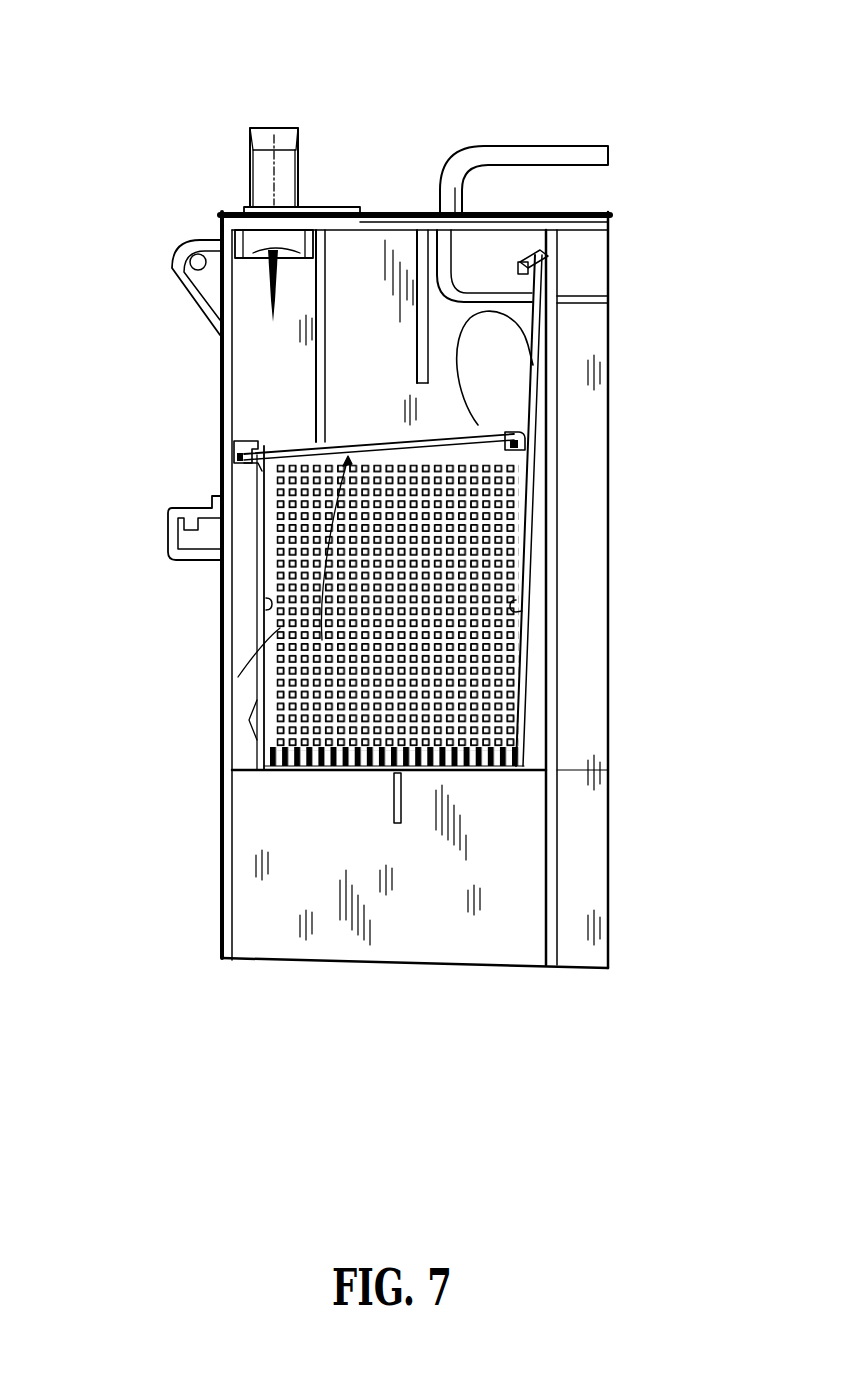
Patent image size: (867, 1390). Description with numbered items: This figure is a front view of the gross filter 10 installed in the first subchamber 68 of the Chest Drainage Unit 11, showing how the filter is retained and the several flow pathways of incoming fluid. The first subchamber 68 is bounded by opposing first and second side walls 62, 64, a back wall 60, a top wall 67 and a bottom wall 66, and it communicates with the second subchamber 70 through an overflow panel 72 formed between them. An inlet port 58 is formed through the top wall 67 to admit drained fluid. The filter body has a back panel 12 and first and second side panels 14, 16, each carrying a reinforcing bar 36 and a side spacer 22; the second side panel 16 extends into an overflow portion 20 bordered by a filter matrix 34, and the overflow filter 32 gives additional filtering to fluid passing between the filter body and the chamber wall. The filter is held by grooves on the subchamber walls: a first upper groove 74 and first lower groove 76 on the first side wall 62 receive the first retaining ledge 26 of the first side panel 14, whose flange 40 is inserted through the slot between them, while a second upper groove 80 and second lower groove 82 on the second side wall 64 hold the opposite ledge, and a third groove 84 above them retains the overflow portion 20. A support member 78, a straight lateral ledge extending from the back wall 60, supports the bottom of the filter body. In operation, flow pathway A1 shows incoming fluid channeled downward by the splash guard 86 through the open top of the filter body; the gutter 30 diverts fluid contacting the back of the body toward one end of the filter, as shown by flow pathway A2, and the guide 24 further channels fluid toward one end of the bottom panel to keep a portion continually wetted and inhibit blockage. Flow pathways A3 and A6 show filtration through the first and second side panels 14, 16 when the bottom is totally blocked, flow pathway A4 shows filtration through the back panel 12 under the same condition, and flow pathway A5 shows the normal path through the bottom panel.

The Chest Drainage Unit 11 is at (208, 170).
The inlet port 58 is at (292, 126).
The top wall 67 is at (423, 232).
The overflow portion 20 is at (494, 292).
The third groove 84 is at (533, 252).
The splash guard 86 is at (330, 245).
The gross filter 10 is at (372, 402).
The overflow filter 32 is at (542, 326).
The overflow panel 72 is at (560, 346).
The gutter 30 is at (536, 425).
The second upper groove 80 is at (522, 441).
The second lower groove 82 is at (555, 398).
The back panel 12 is at (505, 548).
The filter matrix 34 is at (520, 606).
The reinforcing bar 36 is at (520, 662).
The second side panel 16 is at (533, 742).
The side spacer 22 is at (538, 746).
The second side wall 64 is at (560, 812).
The second subchamber 70 is at (596, 856).
The first upper groove 74 is at (236, 440).
The flange 40 is at (236, 450).
The first lower groove 76 is at (240, 465).
The first retaining ledge 26 is at (205, 506).
The guide 24 is at (268, 602).
The first side wall 62 is at (226, 652).
The first side panel 14 is at (250, 735).
The bottom wall 66 is at (290, 962).
The support member 78 is at (404, 826).
The first subchamber 68 is at (510, 934).
The back wall 60 is at (477, 946).
The flow pathway A1 is at (266, 262).
The flow pathway A2 is at (252, 462).
The flow pathway A3 is at (252, 772).
The flow pathway A4 is at (300, 775).
The flow pathway A5 is at (343, 772).
The flow pathway A6 is at (497, 680).